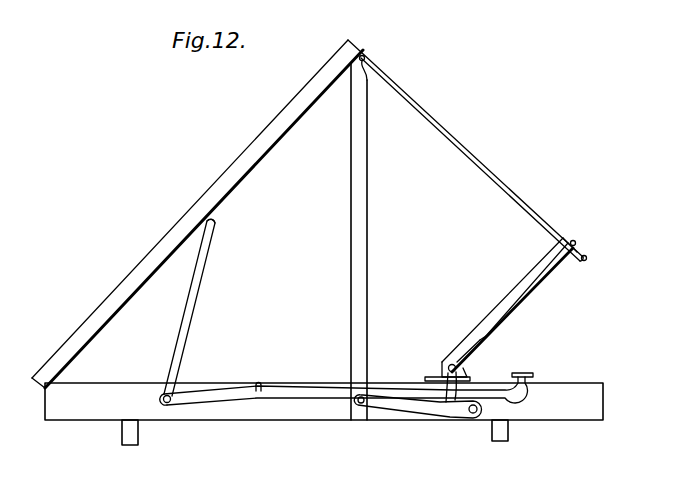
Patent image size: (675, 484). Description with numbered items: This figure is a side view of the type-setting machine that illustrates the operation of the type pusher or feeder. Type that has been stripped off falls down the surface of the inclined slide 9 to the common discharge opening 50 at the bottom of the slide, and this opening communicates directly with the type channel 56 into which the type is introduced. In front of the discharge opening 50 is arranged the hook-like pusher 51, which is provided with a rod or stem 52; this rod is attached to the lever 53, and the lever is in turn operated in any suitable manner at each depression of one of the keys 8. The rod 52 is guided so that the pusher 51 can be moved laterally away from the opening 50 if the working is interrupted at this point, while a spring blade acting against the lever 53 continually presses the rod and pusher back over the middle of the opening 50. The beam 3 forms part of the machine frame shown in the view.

The inclined beam 3 is at (321, 69).
The slide 9 is at (467, 145).
The key 8 is at (313, 392).
The lever 53 is at (447, 404).
The type channel 56 is at (510, 292).
The rod or stem 52 is at (530, 297).
The hook-like pusher 51 is at (575, 241).
The common discharge opening 50 is at (580, 249).